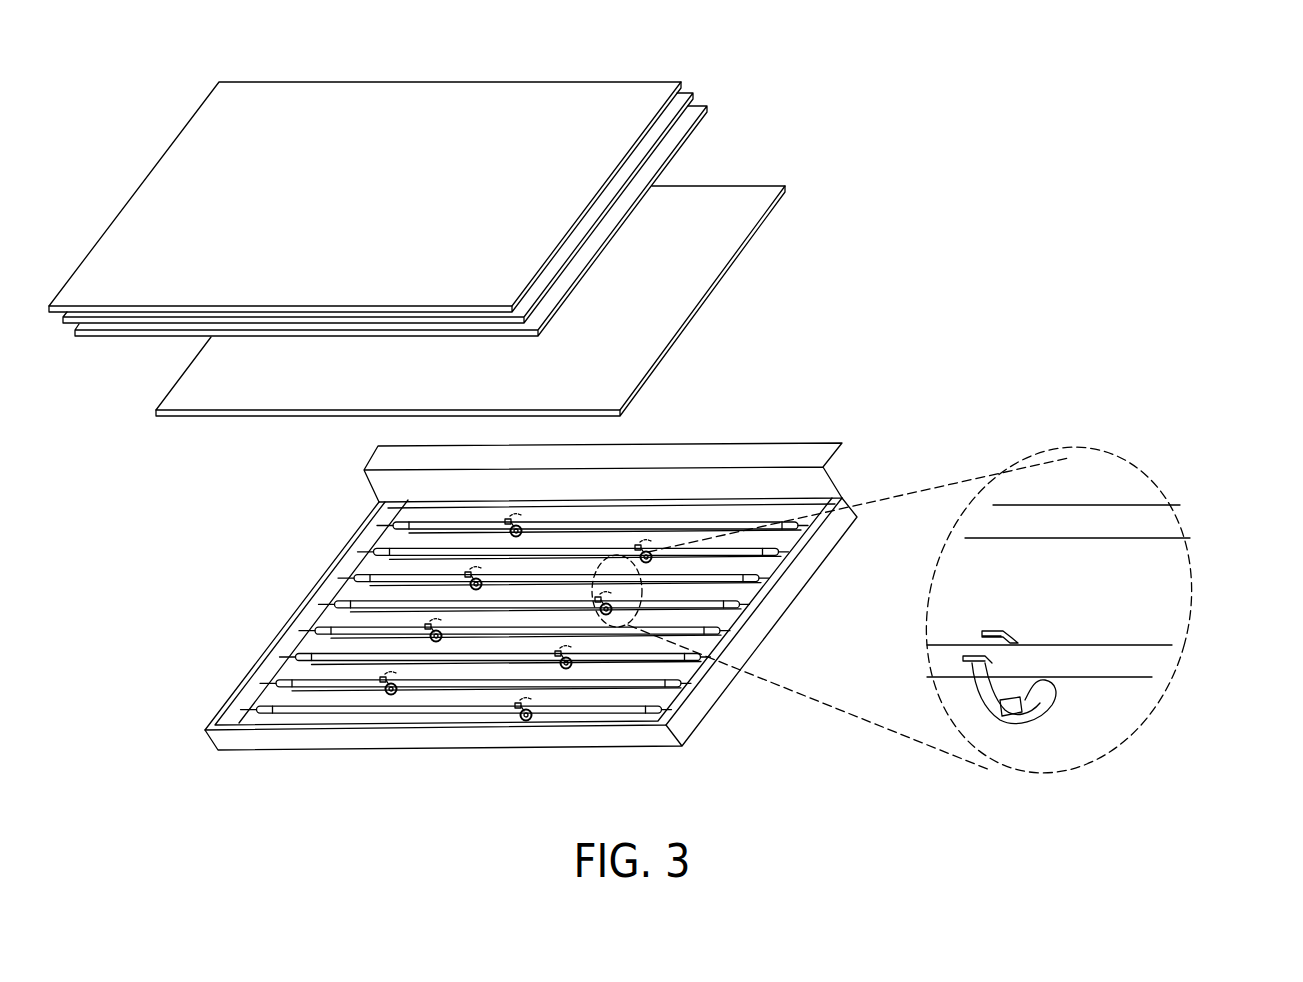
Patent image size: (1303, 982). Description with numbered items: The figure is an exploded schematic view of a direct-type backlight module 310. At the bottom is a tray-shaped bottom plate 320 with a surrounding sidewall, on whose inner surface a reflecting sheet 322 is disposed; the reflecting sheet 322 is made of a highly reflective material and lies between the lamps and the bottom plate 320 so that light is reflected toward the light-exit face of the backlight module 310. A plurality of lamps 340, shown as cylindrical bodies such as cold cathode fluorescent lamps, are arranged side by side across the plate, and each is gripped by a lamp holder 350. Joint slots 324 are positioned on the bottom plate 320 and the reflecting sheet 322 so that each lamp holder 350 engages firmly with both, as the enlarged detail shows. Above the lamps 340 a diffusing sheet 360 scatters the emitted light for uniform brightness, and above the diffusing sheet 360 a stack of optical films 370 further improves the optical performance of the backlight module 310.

The backlight module 310 is at (833, 123).
The bottom plate 320 is at (693, 707).
The reflecting sheet 322 is at (317, 690).
The joint slot 324 is at (1017, 723).
The lamp 340 is at (368, 708).
The lamp holder 350 is at (435, 643).
The diffusing sheet 360 is at (722, 228).
The optical film 370 is at (677, 70).